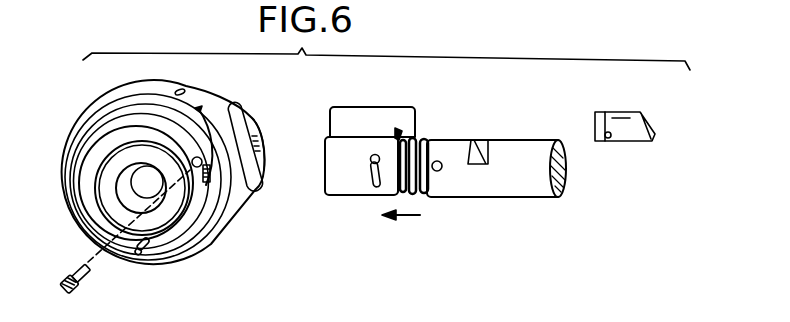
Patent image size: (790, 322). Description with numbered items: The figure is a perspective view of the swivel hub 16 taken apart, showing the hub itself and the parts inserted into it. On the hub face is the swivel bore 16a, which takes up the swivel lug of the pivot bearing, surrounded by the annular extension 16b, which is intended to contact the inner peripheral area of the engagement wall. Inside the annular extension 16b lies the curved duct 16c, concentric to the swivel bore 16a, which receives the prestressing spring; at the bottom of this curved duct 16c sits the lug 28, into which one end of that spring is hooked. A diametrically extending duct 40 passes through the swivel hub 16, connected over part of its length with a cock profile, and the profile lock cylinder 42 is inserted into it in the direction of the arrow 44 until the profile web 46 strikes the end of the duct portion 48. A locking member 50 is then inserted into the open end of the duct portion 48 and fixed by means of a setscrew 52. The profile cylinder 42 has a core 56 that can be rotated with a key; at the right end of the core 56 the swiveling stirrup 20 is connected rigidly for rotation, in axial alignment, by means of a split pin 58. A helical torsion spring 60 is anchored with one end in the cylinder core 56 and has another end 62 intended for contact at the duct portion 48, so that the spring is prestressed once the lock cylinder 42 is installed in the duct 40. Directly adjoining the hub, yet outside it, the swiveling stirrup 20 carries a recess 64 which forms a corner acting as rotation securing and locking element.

The swivel hub 16 is at (212, 243).
The swivel bore 16a is at (132, 173).
The annular extension 16b is at (138, 126).
The curved duct 16c is at (100, 218).
The swiveling stirrup 20 is at (512, 185).
The lug 28 is at (143, 250).
The duct 40 is at (248, 176).
The profile lock cylinder 42 is at (328, 168).
The arrow 44 is at (401, 228).
The profile web 46 is at (360, 117).
The duct portion 48 is at (252, 119).
The locking member 50 is at (627, 144).
The setscrew 52 is at (78, 287).
The core 56 is at (373, 183).
The split pin 58 is at (440, 171).
The helical torsion spring 60 is at (422, 142).
The end of torsion spring 62 is at (397, 131).
The recess 64 is at (487, 141).